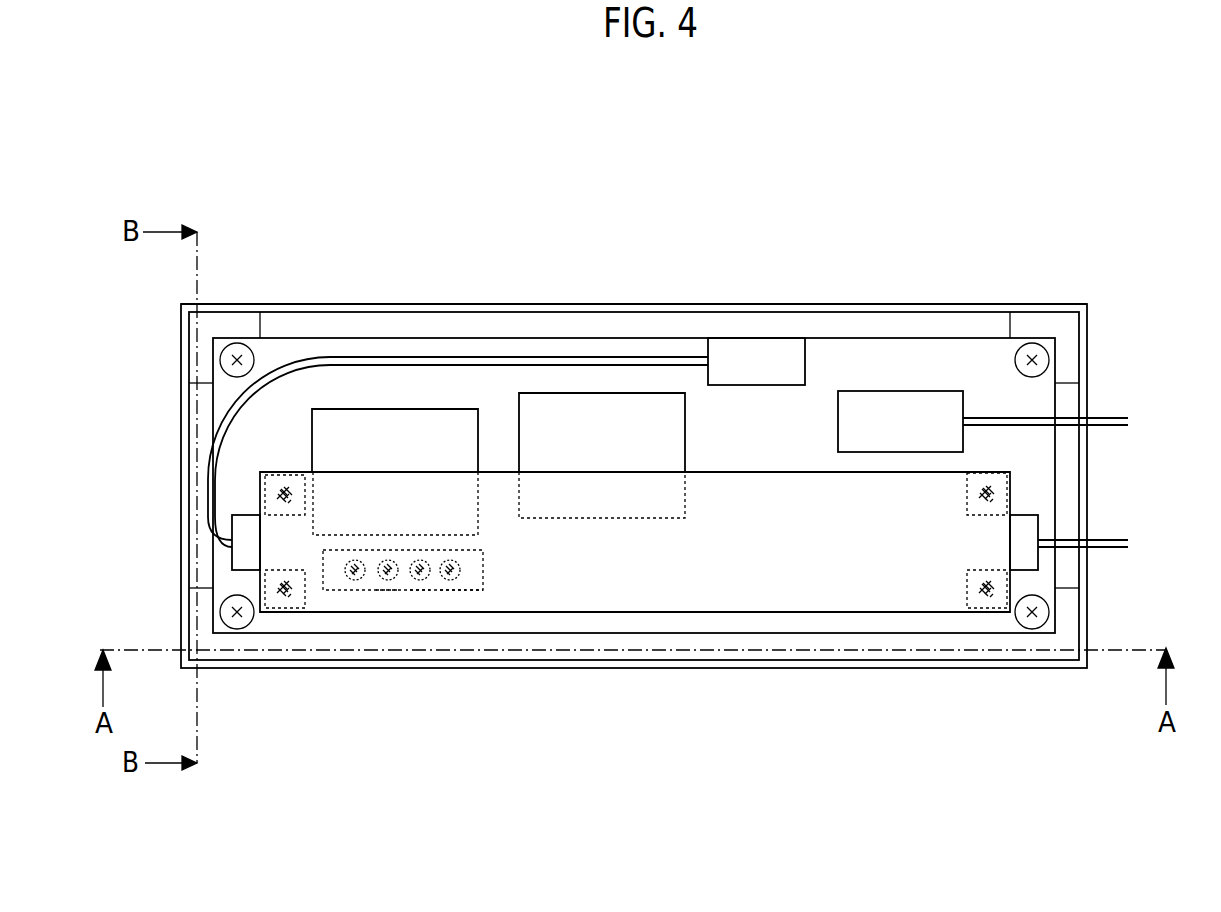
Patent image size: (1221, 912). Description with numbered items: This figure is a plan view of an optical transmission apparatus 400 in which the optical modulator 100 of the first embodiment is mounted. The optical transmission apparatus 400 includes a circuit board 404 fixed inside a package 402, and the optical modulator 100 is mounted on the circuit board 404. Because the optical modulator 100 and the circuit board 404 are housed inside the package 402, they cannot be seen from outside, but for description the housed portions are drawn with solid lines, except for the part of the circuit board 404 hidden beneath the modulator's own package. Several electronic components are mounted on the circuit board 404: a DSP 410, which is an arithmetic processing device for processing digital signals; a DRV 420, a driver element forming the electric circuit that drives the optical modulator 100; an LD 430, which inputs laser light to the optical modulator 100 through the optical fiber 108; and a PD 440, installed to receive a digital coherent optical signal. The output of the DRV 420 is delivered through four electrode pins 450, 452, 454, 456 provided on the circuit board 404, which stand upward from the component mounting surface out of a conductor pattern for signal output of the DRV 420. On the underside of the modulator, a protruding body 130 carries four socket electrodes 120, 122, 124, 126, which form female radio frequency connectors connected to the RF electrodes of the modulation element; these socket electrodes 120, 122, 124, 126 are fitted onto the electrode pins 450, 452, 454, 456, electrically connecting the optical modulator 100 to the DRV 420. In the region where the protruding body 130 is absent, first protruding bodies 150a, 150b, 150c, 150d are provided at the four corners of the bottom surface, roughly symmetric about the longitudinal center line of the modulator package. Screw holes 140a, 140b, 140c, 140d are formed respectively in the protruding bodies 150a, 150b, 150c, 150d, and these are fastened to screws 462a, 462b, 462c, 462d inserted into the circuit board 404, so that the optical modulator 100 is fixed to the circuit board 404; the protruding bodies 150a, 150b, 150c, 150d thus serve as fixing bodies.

The optical transmission apparatus 400 is at (245, 123).
The package 402 is at (240, 304).
The circuit board 404 is at (288, 355).
The optical modulator 100 is at (747, 605).
The optical fiber 108 is at (657, 362).
The DSP (Digital Signal Processor) 410 is at (575, 435).
The DRV (Driver) 420 is at (395, 428).
The LD (Laser Diode) 430 is at (750, 358).
The PD (Photo Diode) 440 is at (895, 420).
The electrode pin 450 is at (355, 580).
The electrode pin 452 is at (388, 580).
The electrode pin 454 is at (450, 580).
The electrode pin 456 is at (455, 575).
The socket electrode 120 is at (355, 570).
The socket electrode 122 is at (388, 570).
The socket electrode 124 is at (420, 570).
The socket electrode 126 is at (450, 570).
The protruding body 130 is at (420, 580).
The screw hole 140a is at (270, 482).
The screw hole 140b is at (266, 610).
The screw hole 140c is at (978, 612).
The screw hole 140d is at (1008, 463).
The protruding body 150a is at (272, 497).
The protruding body 150b is at (262, 588).
The protruding body 150c is at (1010, 637).
The protruding body 150d is at (1013, 477).
The screw 462a is at (262, 495).
The screw 462b is at (262, 576).
The screw 462c is at (1008, 586).
The screw 462d is at (1008, 495).